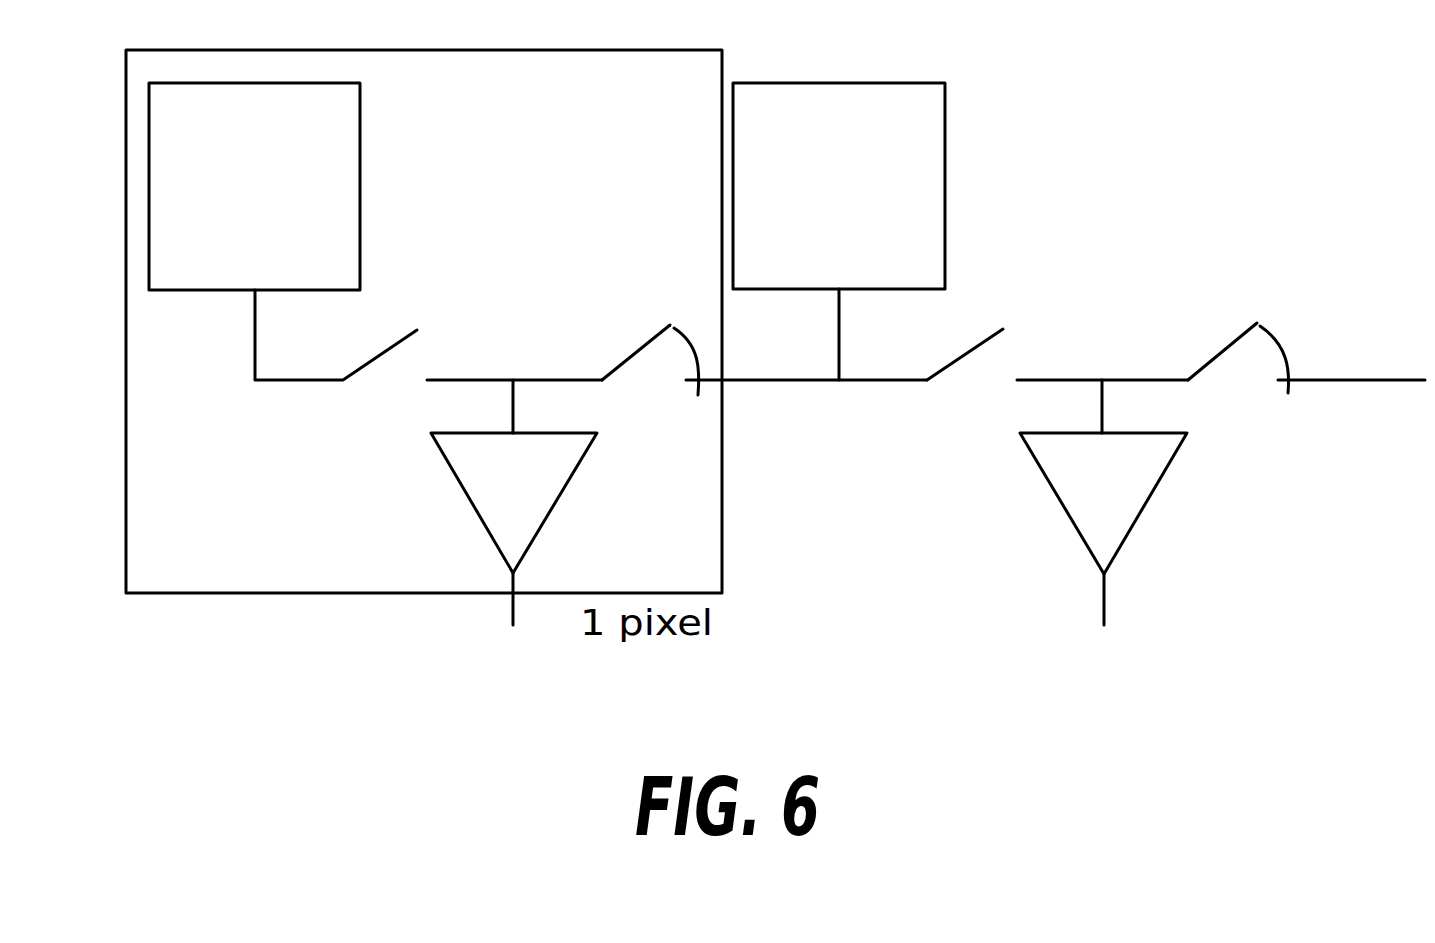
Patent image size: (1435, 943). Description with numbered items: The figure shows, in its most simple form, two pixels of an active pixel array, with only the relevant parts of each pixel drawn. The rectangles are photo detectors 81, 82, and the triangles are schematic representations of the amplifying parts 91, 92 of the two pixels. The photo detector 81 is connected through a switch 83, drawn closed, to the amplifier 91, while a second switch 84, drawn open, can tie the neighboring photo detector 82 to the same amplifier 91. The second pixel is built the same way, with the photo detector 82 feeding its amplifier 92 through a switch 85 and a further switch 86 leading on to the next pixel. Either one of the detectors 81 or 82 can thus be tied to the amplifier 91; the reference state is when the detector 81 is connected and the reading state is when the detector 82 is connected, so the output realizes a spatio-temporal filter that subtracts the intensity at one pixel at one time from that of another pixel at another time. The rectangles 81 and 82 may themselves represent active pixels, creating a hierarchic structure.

The photo detector 81 is at (360, 168).
The photo detector 82 is at (945, 162).
The switch 83 is at (392, 348).
The switch 84 is at (650, 340).
The switch 85 is at (982, 340).
The switch 86 is at (1250, 335).
The amplifying part of the pixel 91 is at (457, 480).
The amplifying part of the pixel 92 is at (1058, 502).